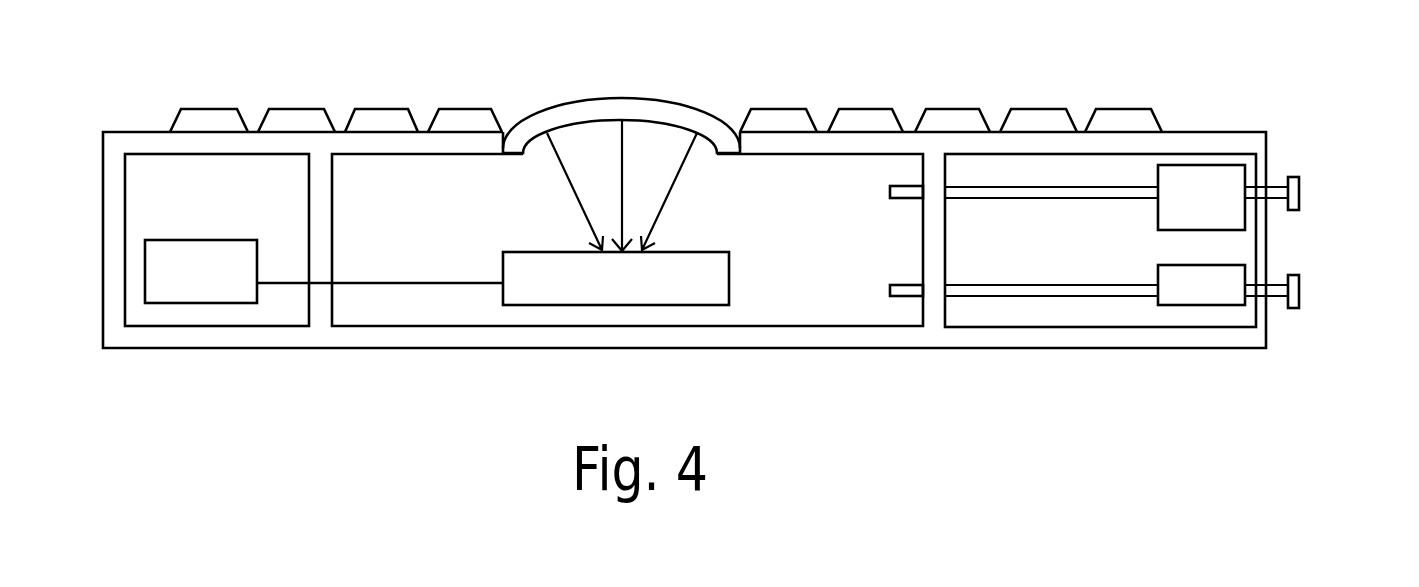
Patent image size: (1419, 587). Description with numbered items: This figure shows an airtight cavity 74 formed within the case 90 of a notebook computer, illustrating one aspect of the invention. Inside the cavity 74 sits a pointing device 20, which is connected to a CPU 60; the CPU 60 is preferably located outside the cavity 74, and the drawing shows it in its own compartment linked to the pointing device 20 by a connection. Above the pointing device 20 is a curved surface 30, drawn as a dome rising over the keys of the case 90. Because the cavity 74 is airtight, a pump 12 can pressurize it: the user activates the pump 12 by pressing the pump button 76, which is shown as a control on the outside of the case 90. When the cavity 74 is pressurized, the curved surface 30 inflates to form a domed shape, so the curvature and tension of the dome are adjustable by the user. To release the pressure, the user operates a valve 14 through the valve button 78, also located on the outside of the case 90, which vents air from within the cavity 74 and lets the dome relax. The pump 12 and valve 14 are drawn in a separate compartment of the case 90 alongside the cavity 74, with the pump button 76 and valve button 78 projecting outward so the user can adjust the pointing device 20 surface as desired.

The pump 12 is at (1208, 177).
The valve 14 is at (1237, 298).
The pointing device 20 is at (740, 162).
The curved surface 30 is at (682, 103).
The CPU 60 is at (187, 256).
The cavity 74 is at (378, 309).
The pump button 76 is at (1300, 185).
The valve button 78 is at (1297, 283).
The case 90 is at (898, 143).